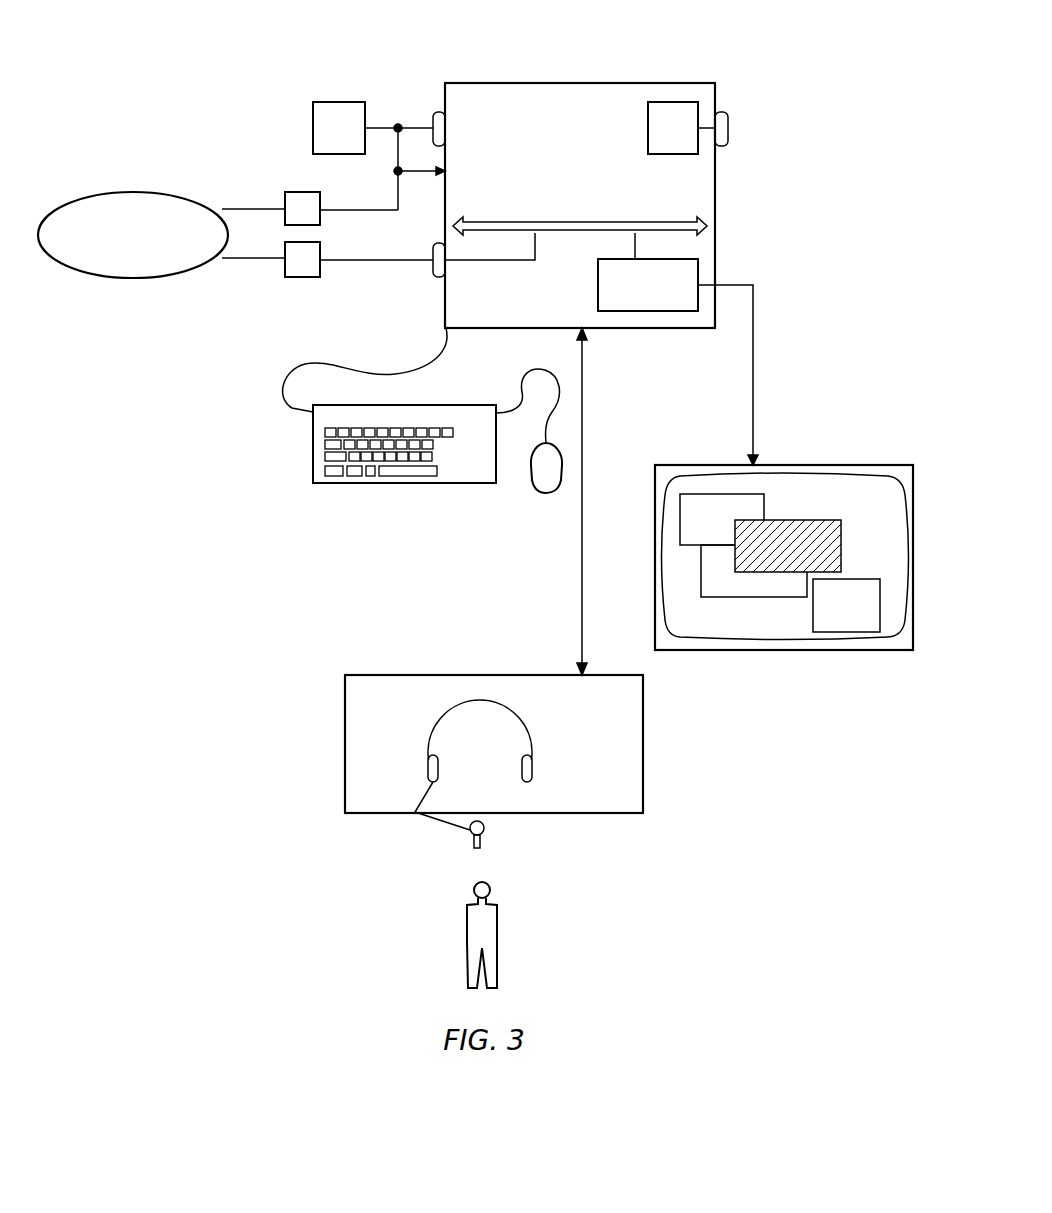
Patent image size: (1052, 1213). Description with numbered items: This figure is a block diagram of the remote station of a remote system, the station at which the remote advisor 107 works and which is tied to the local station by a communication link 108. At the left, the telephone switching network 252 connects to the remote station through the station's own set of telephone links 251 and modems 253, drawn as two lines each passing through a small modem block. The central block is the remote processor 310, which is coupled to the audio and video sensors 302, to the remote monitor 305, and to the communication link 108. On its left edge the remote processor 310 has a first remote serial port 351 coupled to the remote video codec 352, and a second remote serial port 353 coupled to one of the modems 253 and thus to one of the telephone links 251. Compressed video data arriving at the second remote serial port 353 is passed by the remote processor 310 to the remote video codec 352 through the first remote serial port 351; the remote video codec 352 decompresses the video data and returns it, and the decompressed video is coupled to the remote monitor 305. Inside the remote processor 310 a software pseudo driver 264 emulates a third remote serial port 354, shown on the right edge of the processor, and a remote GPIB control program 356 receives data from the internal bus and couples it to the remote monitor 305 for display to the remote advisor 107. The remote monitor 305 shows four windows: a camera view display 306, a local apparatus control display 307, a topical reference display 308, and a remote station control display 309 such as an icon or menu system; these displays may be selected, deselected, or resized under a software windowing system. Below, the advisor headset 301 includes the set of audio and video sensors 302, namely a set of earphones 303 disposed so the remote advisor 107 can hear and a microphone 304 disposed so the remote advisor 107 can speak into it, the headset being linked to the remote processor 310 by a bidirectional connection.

The communication link 108 is at (186, 80).
The telephone switching network 252 is at (136, 192).
The telephone links 251 is at (255, 209).
The modems 253 is at (302, 192).
The remote video codec 352 is at (341, 102).
The first remote serial port 351 is at (437, 112).
The second remote serial port 353 is at (432, 258).
The third remote serial port 354 is at (724, 112).
The software pseudo driver 264 is at (648, 130).
The remote processor 310 is at (716, 187).
The remote GPIB control program 356 is at (598, 283).
The remote monitor 305 is at (722, 465).
The camera view display 306 is at (680, 520).
The local apparatus control display 307 is at (812, 520).
The topical reference display 308 is at (700, 572).
The remote station control display 309 is at (840, 632).
The audio and video sensors 302 is at (645, 758).
The advisor headset 301 is at (530, 732).
The earphones 303 is at (438, 768).
The microphone 304 is at (488, 830).
The remote advisor 107 is at (497, 930).